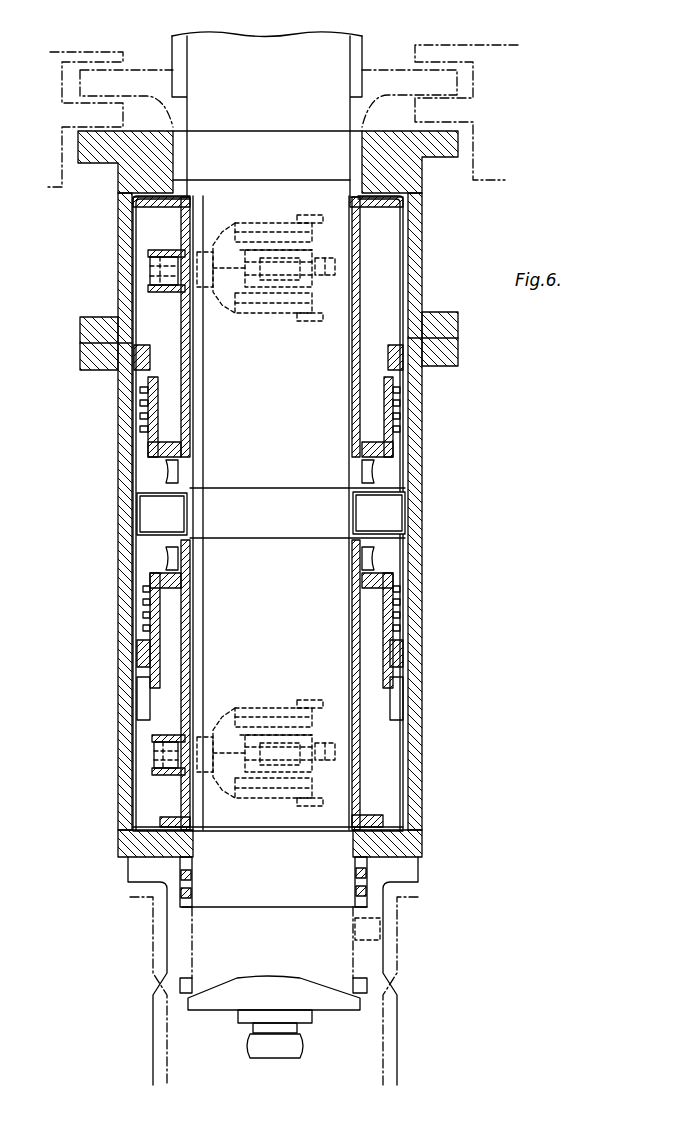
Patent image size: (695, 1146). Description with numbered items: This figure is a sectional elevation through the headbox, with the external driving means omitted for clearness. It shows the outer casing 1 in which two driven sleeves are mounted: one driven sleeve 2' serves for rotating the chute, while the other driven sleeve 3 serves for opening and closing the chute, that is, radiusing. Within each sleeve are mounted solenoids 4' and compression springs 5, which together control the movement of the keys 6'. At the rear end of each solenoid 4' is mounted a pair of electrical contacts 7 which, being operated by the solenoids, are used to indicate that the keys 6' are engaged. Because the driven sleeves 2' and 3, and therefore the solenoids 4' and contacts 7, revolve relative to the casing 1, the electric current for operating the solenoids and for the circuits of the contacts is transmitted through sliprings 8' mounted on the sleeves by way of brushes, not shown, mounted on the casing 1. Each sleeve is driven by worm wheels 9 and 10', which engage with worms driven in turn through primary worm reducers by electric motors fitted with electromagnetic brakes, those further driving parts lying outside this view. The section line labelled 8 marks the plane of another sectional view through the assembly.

The outer casing 1 is at (120, 478).
The driven sleeve 2' is at (268, 327).
The driven sleeve 3 is at (172, 650).
The solenoid 4' is at (292, 492).
The compression spring 5 is at (262, 228).
The key 6' is at (144, 512).
The electrical contacts 7 is at (330, 262).
The slipring 8' is at (237, 514).
The worm wheel 9 is at (170, 466).
The worm wheel 10' is at (230, 515).
The section line 8 is at (266, 747).